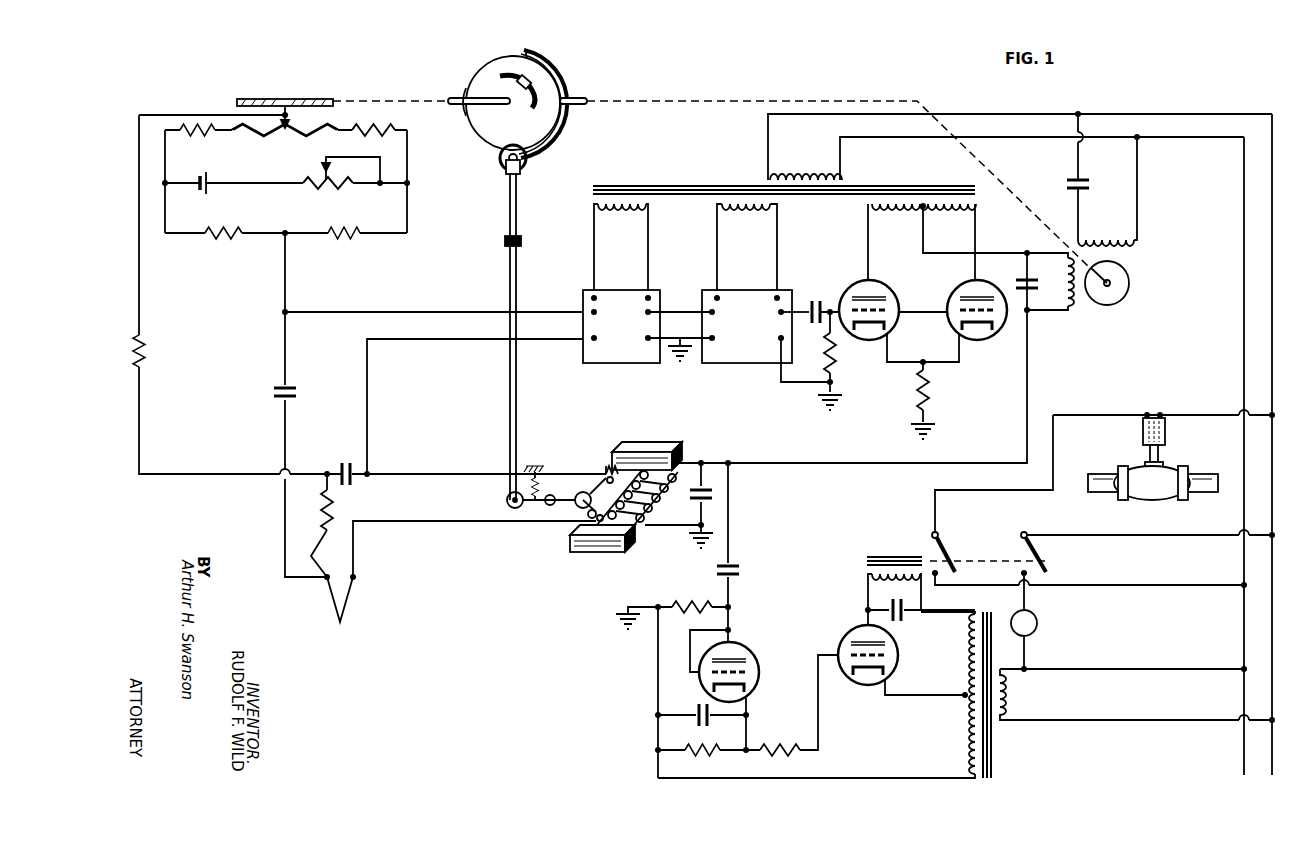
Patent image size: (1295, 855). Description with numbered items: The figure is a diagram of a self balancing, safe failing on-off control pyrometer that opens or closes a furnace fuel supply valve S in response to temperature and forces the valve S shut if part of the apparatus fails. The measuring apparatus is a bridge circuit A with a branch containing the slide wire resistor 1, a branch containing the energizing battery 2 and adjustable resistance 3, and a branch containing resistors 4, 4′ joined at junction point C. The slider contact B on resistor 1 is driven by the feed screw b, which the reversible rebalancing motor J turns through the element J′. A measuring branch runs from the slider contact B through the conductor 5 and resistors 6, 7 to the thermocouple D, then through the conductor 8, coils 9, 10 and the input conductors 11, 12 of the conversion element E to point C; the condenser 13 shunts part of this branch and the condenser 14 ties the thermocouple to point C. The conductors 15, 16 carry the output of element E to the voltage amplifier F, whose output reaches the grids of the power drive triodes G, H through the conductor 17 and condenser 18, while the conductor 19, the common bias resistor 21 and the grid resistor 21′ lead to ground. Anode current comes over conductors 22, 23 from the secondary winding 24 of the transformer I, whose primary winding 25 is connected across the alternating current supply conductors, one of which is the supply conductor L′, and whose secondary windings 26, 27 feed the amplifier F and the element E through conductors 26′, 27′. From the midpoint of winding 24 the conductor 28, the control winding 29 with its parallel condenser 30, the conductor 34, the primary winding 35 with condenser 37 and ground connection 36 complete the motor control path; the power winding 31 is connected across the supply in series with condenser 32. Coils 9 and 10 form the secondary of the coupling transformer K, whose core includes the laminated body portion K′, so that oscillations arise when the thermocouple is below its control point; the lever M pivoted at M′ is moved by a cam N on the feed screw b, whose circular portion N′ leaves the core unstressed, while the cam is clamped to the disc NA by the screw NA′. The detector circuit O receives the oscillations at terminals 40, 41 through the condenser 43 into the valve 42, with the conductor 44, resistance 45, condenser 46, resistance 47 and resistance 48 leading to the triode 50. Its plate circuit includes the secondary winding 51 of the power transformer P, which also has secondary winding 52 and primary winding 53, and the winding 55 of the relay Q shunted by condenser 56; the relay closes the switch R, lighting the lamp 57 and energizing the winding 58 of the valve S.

The slide wire resistor 1 is at (287, 133).
The energizing battery 2 is at (205, 172).
The adjustable resistance 3 is at (328, 185).
The resistor 4 is at (214, 228).
The resistor 4′ is at (336, 228).
The conductor 5 is at (153, 290).
The resistor 6 is at (143, 349).
The resistor 7 is at (331, 508).
The conductor 8 is at (396, 510).
The coil 9 is at (610, 514).
The coil 10 is at (600, 475).
The input conductor 11 is at (438, 470).
The second input conductor 12 is at (400, 310).
The condenser 13 is at (344, 462).
The condenser 14 is at (297, 392).
The conductor 15 is at (672, 310).
The conductor 16 is at (672, 336).
The conductor 17 is at (796, 308).
The condenser 18 is at (824, 300).
The conductor 19 is at (790, 384).
The common bias resistor 21 is at (930, 392).
The grid resistor 21′ is at (836, 355).
The conductor 22 is at (868, 238).
The conductor 23 is at (977, 250).
The secondary winding 24 is at (930, 212).
The primary winding 25 is at (798, 178).
The secondary winding 26 is at (732, 212).
The conductors 26′ is at (777, 250).
The secondary winding 27 is at (608, 212).
The conductors 27′ is at (648, 250).
The conductor 28 is at (923, 238).
The control winding 29 is at (1035, 283).
The condenser 30 is at (1060, 298).
The power winding 31 is at (1106, 225).
The condenser 32 is at (1091, 188).
The conductor 34 is at (1029, 392).
The primary winding 35 is at (668, 520).
The ground connection 36 is at (690, 536).
The condenser 37 is at (690, 484).
The input terminal 40 is at (731, 545).
The input terminal 41 is at (650, 594).
The electronic valve 42 is at (752, 647).
The condenser 43 is at (740, 570).
The conductor 44 is at (700, 628).
The high resistance 45 is at (718, 732).
The condenser 46 is at (694, 700).
The resistance 47 is at (690, 600).
The resistance 48 is at (791, 732).
The triode 50 is at (852, 628).
The secondary winding 51 is at (966, 649).
The secondary winding 52 is at (966, 729).
The primary winding 53 is at (1016, 692).
The relay winding 55 is at (888, 582).
The condenser 56 is at (906, 615).
The signal lamp 57 is at (1037, 623).
The winding 58 is at (1165, 432).
The bridge circuit A is at (420, 207).
The slider contact B is at (287, 100).
The feed screw b is at (330, 97).
The junction point C is at (287, 235).
The thermocouple D is at (350, 595).
The conversion element E is at (624, 331).
The voltage amplifier F is at (748, 331).
The power drive triode G is at (889, 278).
The power drive triode H is at (991, 280).
The transformer I is at (680, 180).
The reversible rebalancing motor J is at (1139, 277).
The connecting element J′ is at (582, 96).
The coupling transformer K is at (616, 512).
The U shaped laminated iron body portion K′ is at (672, 442).
The lever M is at (506, 506).
The lever pivot M′ is at (556, 497).
The cam element N is at (478, 70).
The circular edge portion N′ is at (463, 118).
The disc NA is at (566, 125).
The clamping screw NA′ is at (535, 62).
The detector circuit O is at (632, 698).
The power transformer P is at (1005, 739).
The electromagnetic relay Q is at (878, 547).
The two pole control switch R is at (983, 546).
The fuel supply valve S is at (1148, 500).
The supply conductor L′ is at (1268, 758).